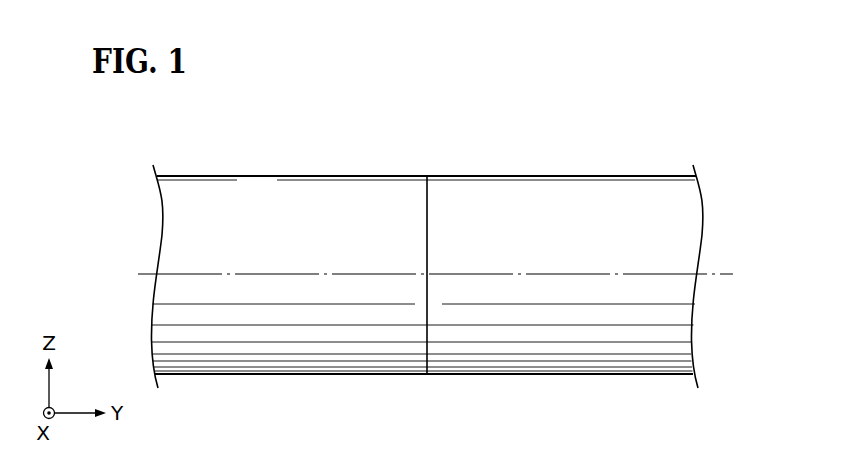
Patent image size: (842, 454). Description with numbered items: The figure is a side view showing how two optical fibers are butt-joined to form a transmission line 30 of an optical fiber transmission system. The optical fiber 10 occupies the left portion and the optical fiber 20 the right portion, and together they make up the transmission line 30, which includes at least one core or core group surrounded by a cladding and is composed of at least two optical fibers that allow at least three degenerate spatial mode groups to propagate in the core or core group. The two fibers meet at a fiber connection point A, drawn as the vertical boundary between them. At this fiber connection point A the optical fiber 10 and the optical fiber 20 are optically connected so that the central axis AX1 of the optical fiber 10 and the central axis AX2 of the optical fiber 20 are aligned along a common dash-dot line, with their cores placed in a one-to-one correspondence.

The transmission line 30 is at (660, 122).
The optical fiber 10 is at (347, 176).
The optical fiber 20 is at (606, 176).
The central axis of the optical fiber 10 AX1 is at (258, 275).
The central axis of the optical fiber 20 AX2 is at (603, 275).
The fiber connection point A is at (470, 373).